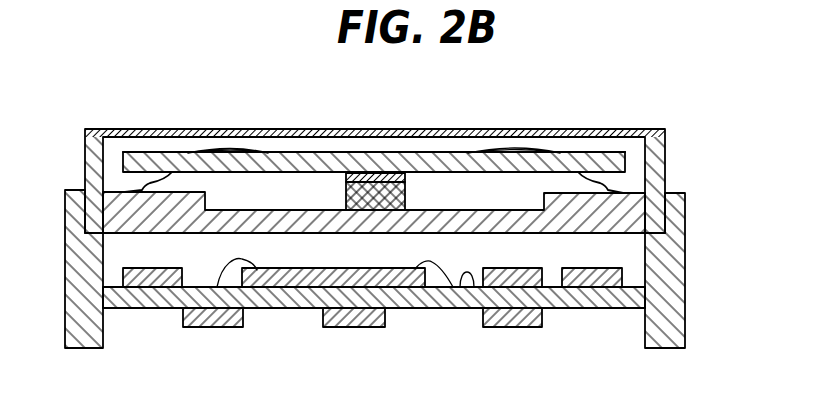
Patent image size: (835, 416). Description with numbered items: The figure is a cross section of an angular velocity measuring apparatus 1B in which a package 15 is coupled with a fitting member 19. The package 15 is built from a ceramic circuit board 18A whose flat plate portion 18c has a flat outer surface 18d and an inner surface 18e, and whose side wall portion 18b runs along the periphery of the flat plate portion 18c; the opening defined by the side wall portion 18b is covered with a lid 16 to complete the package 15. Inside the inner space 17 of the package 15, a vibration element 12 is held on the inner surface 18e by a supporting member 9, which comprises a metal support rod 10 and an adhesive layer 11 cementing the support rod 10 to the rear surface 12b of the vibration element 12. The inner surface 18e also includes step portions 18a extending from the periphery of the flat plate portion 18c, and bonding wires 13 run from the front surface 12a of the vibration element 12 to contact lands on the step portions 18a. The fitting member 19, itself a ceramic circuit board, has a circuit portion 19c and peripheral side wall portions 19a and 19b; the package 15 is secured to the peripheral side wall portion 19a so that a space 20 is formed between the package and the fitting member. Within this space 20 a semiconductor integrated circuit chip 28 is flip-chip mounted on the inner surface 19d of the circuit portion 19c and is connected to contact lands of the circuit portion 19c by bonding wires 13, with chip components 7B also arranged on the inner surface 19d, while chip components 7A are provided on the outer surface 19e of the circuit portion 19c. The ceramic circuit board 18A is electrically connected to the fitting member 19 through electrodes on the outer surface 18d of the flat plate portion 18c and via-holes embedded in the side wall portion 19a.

The angular velocity measuring apparatus 1B is at (690, 153).
The package 15 is at (675, 132).
The lid 16 is at (462, 135).
The side wall portion 18b is at (93, 163).
The ceramic circuit board 18A is at (663, 167).
The step portions 18a is at (640, 206).
The inner space 17 is at (273, 186).
The vibration element 12 is at (572, 149).
The front surface 12a is at (604, 150).
The inner surface 18e is at (235, 150).
The bonding wires 13 is at (508, 150).
The adhesive layer 11 is at (331, 186).
The supporting member 9 is at (374, 182).
The fitting member 19 is at (695, 280).
The peripheral side wall portion 19a is at (673, 246).
The peripheral side wall portion 19b is at (673, 330).
The semiconductor integrated circuit chip 28 is at (290, 308).
The chip components 7B is at (122, 308).
The outer surface 19e is at (395, 237).
The circuit portion 19c is at (572, 300).
The inner surface 19d is at (467, 287).
The outer surface 18d is at (160, 240).
The flat plate portion 18c is at (268, 237).
The space 20 is at (520, 263).
The rear surface 12b is at (607, 237).
The chip components 7A is at (215, 328).
The support rod 10 is at (425, 270).